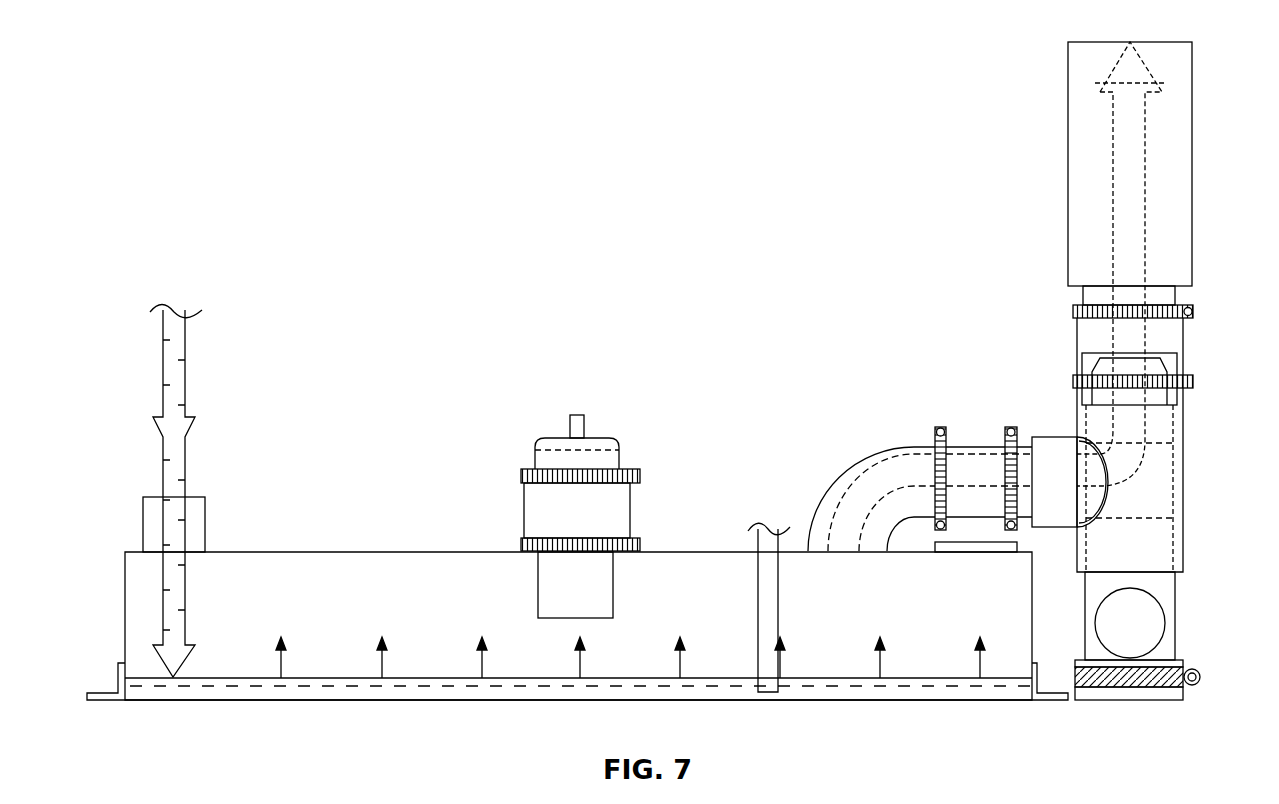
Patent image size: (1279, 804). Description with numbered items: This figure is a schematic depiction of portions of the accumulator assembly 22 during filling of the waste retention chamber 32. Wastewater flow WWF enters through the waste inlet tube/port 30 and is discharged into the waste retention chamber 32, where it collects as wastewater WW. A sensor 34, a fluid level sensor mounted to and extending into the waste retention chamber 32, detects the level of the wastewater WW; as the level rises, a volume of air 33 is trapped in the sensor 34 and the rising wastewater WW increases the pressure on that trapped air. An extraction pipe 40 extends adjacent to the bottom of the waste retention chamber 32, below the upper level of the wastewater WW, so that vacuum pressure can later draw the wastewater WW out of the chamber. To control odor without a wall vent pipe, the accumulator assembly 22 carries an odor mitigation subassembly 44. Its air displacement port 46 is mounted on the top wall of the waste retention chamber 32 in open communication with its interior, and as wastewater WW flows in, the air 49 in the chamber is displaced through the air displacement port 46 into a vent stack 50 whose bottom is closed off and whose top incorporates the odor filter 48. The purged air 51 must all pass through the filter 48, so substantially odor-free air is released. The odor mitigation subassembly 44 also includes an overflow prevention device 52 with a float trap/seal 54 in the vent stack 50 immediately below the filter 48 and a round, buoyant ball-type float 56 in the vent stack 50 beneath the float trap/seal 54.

The accumulator assembly 22 is at (318, 180).
The waste inlet tube/port 30 is at (205, 512).
The waste retention chamber 32 is at (330, 552).
The volume of air 33 is at (578, 605).
The sensor 34 is at (612, 462).
The extraction pipe 40 is at (770, 530).
The odor mitigation subassembly 44 is at (948, 275).
The air displacement port 46 is at (915, 452).
The odor filter 48 is at (1080, 172).
The air 49 is at (395, 565).
The vent stack 50 is at (1185, 490).
The purged air 51 is at (862, 498).
The overflow prevention device 52 is at (1077, 362).
The float trap/seal 54 is at (1170, 365).
The float 56 is at (1155, 623).
The wastewater flow WWF is at (185, 378).
The wastewater WW is at (400, 690).